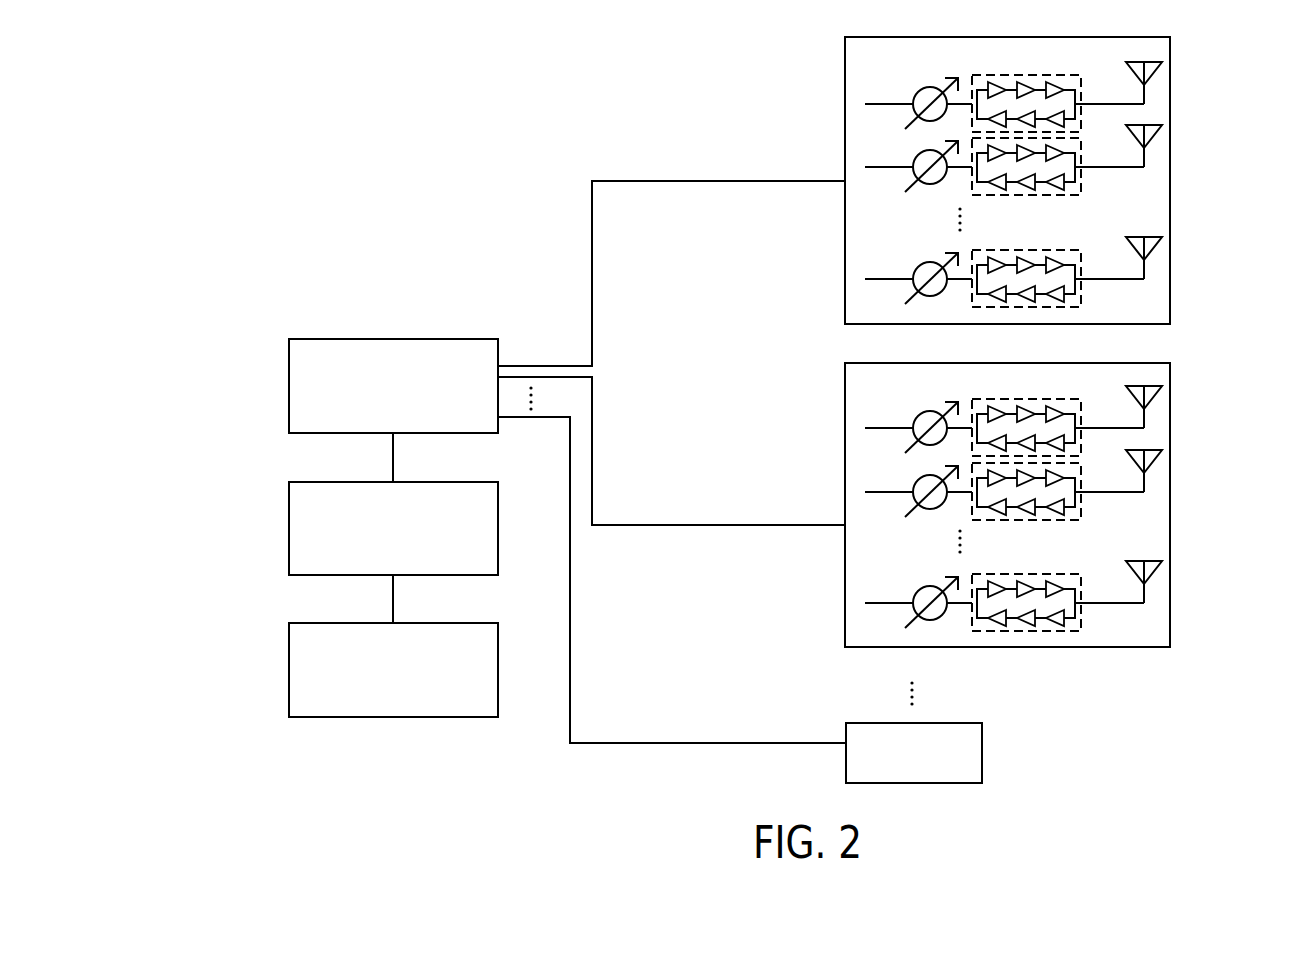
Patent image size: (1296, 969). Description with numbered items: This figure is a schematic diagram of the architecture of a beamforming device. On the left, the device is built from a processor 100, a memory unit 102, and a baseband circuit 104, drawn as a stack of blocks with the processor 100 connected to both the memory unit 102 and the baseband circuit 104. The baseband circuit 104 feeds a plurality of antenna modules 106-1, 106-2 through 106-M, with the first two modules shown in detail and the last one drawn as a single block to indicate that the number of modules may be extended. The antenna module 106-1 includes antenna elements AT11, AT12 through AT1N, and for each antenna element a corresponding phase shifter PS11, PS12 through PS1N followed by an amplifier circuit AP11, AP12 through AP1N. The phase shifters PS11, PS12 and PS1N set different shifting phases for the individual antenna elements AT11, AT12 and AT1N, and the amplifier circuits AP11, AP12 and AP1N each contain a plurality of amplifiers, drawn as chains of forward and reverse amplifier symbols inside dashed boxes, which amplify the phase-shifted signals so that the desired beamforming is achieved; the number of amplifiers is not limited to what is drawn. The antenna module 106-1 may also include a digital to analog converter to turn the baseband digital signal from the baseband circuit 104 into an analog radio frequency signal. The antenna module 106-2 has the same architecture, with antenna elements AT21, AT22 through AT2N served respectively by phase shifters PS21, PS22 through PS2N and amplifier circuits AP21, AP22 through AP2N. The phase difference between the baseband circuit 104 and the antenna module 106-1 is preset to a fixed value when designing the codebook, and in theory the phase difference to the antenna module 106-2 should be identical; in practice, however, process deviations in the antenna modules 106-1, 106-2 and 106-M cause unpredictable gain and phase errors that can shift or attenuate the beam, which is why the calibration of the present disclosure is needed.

The processor 100 is at (289, 530).
The memory unit 102 is at (289, 671).
The baseband circuit 104 is at (289, 387).
The antenna module 106-1 is at (845, 85).
The antenna module 106-2 is at (845, 408).
The antenna module 106-M is at (982, 748).
The phase shifter PS11 is at (920, 95).
The phase shifter PS12 is at (920, 158).
The phase shifter PS1N is at (920, 270).
The phase shifter PS21 is at (920, 419).
The phase shifter PS22 is at (920, 483).
The phase shifter PS2N is at (920, 594).
The amplifier circuit AP11 is at (1095, 70).
The amplifier circuit AP12 is at (1082, 187).
The amplifier circuit AP1N is at (1082, 299).
The amplifier circuit AP21 is at (1095, 394).
The amplifier circuit AP22 is at (1082, 512).
The amplifier circuit AP2N is at (1082, 623).
The antenna element AT11 is at (1162, 62).
The antenna element AT12 is at (1162, 125).
The antenna element AT1N is at (1162, 237).
The antenna element AT21 is at (1162, 386).
The antenna element AT22 is at (1162, 450).
The antenna element AT2N is at (1162, 561).